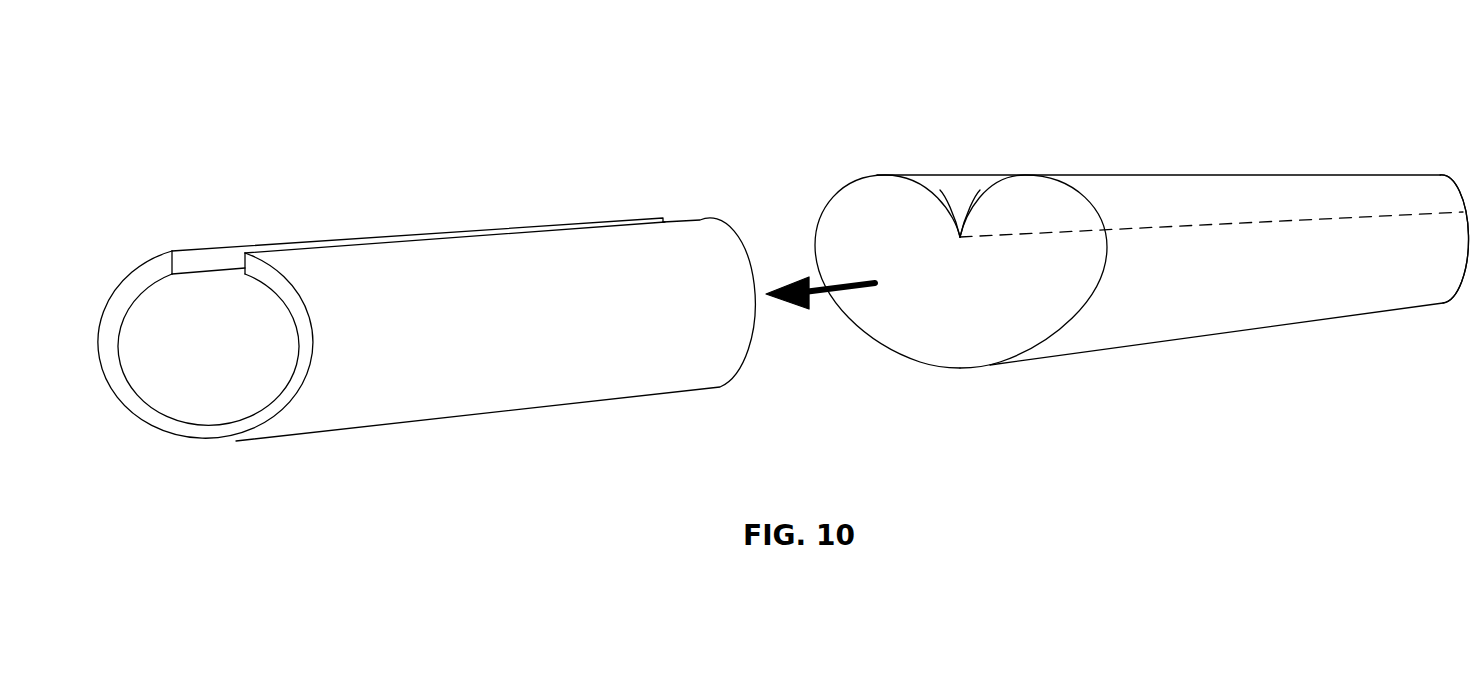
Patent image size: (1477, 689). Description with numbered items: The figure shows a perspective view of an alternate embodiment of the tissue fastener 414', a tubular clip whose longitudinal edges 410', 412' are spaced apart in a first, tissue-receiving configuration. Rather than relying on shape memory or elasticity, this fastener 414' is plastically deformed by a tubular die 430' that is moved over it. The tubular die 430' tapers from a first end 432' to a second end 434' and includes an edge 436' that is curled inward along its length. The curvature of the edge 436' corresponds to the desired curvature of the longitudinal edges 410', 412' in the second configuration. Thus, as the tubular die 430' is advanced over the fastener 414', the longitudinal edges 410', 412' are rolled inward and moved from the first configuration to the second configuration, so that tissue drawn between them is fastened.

The longitudinal edge 410' is at (205, 293).
The longitudinal edge 412' is at (418, 200).
The fastener 414' is at (495, 281).
The tubular die 430' is at (1173, 216).
The first end 432' is at (950, 229).
The second end 434' is at (1435, 185).
The edge 436' is at (967, 156).